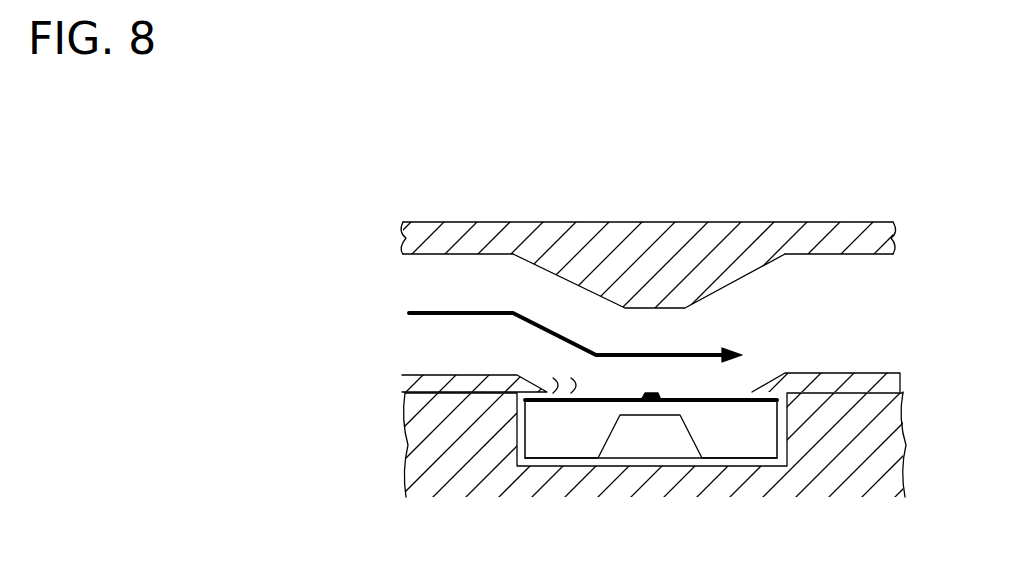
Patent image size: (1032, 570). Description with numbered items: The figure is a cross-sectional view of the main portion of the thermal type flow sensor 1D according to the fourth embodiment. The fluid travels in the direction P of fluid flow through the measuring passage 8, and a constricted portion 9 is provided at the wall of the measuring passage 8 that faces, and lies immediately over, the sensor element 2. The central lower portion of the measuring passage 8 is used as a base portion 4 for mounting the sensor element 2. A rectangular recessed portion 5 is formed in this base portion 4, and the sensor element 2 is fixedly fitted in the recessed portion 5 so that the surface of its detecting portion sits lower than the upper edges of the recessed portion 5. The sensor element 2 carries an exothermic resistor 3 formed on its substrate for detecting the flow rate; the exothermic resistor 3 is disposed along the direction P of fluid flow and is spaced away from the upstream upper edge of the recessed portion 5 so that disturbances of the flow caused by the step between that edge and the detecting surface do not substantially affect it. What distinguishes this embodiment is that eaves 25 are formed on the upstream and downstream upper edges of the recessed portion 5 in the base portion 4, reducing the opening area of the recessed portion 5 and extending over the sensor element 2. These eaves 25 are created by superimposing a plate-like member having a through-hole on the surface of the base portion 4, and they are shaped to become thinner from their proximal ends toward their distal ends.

The thermal type flow sensor 1D is at (379, 178).
The measuring passage 8 is at (425, 254).
The constricted portion 9 is at (675, 268).
The direction of fluid flow P is at (440, 312).
The eaves 25 is at (537, 386).
The base portion 4 is at (408, 444).
The sensor element 2 is at (558, 445).
The recessed portion 5 is at (640, 465).
The exothermic resistor 3 is at (662, 392).